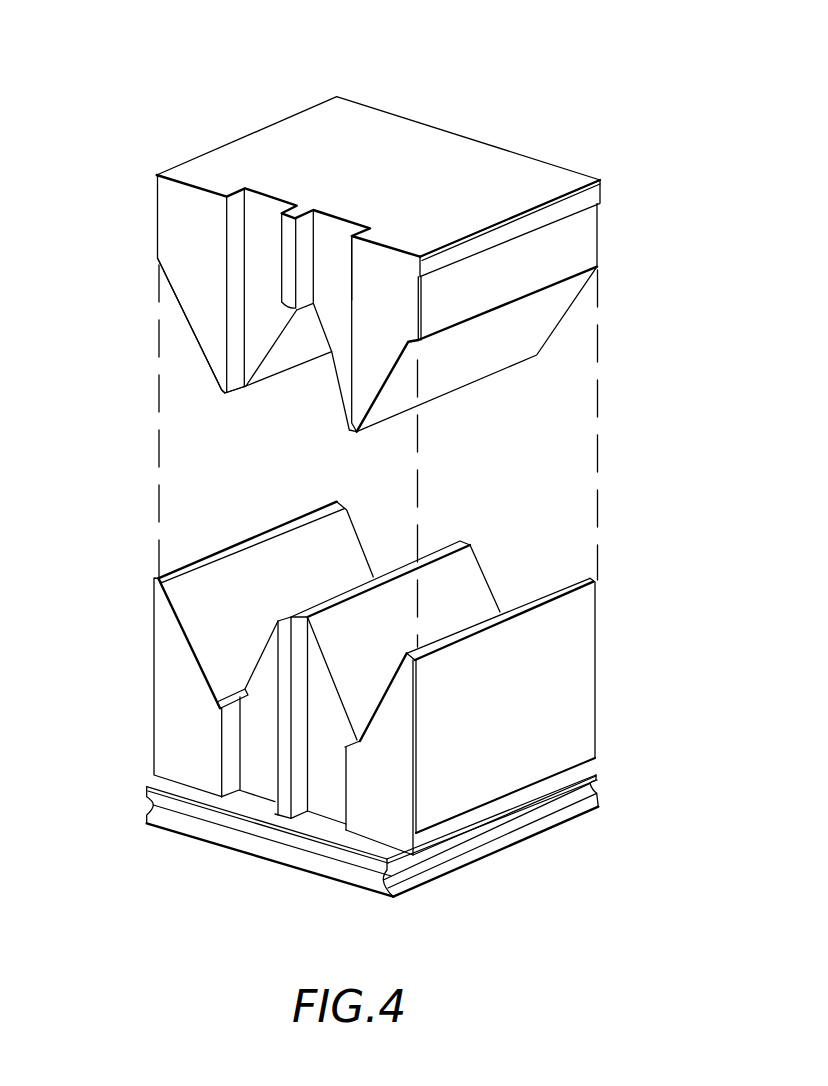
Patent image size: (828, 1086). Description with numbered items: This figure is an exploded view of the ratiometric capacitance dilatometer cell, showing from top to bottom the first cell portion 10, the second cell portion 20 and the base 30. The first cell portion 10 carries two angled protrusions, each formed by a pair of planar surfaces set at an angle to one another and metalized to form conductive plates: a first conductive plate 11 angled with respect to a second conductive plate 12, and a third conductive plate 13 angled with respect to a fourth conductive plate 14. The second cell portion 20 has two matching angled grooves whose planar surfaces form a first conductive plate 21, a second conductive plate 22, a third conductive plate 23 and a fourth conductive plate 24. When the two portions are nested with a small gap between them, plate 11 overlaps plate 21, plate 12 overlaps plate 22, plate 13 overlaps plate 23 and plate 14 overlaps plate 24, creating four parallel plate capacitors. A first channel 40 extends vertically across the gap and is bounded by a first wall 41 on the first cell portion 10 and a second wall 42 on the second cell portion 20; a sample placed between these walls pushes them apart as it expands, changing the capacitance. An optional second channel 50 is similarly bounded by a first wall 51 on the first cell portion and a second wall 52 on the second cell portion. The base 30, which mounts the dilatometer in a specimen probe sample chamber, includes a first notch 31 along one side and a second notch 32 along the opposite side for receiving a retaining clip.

The first cell portion 10 is at (465, 165).
The first conductive plate 11 is at (203, 367).
The second conductive plate 12 is at (274, 365).
The third conductive plate 13 is at (333, 358).
The fourth conductive plate 14 is at (533, 343).
The first channel 40 is at (257, 203).
The first wall 41 is at (232, 383).
The second channel 50 is at (336, 227).
The first wall 51 is at (352, 428).
The second cell portion 20 is at (573, 698).
The first conductive plate 21 is at (355, 565).
The second conductive plate 22 is at (432, 545).
The third conductive plate 23 is at (475, 583).
The fourth conductive plate 24 is at (573, 580).
The second wall 42 is at (277, 637).
The second wall 52 is at (298, 645).
The base 30 is at (256, 845).
The first notch 31 is at (148, 804).
The second notch 32 is at (456, 848).